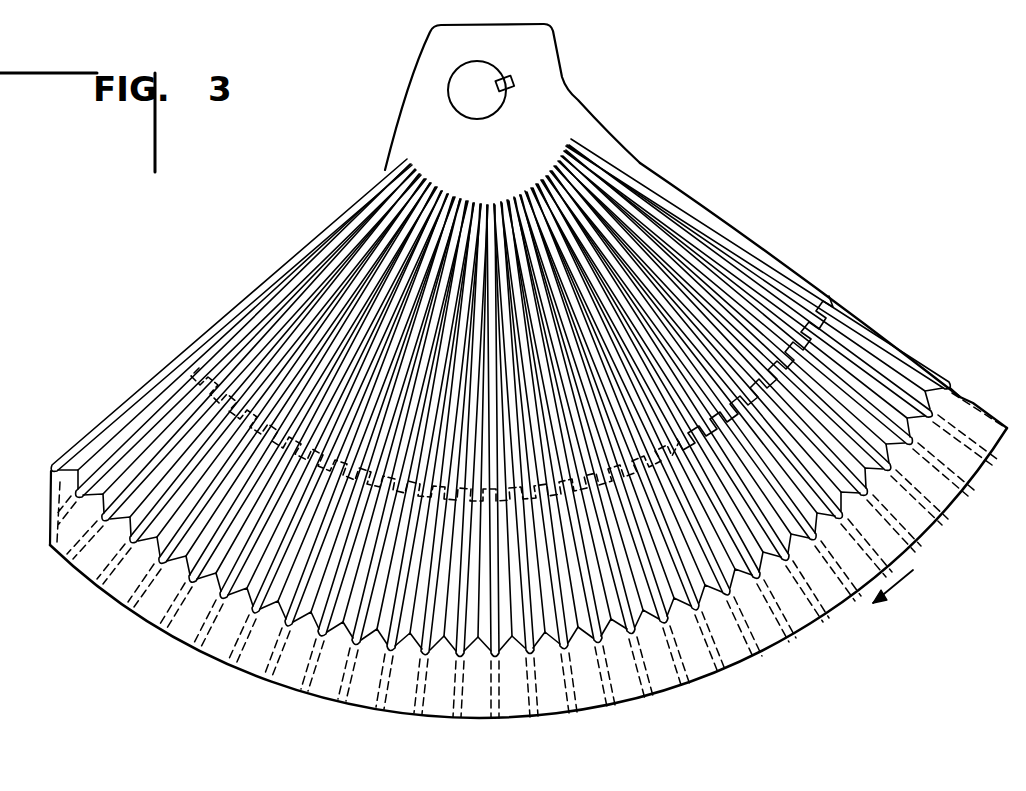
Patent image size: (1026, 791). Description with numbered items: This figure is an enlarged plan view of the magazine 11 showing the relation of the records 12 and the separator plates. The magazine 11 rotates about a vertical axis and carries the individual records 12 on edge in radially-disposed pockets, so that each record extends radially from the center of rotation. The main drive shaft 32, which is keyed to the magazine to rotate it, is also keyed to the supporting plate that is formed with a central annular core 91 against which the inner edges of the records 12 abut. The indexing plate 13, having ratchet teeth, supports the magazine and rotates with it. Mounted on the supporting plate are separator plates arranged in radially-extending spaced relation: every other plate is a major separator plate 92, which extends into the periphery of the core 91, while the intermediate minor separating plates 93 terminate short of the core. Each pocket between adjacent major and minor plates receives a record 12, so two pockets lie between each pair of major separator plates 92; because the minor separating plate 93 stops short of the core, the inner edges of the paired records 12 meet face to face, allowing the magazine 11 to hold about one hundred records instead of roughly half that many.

The magazine 11 is at (612, 686).
The record 12 is at (528, 417).
The indexing plate 13 is at (836, 300).
The main drive shaft 32 is at (452, 82).
The central annular core 91 is at (512, 99).
The major separator plate 92 is at (245, 343).
The minor separating plate 93 is at (268, 290).